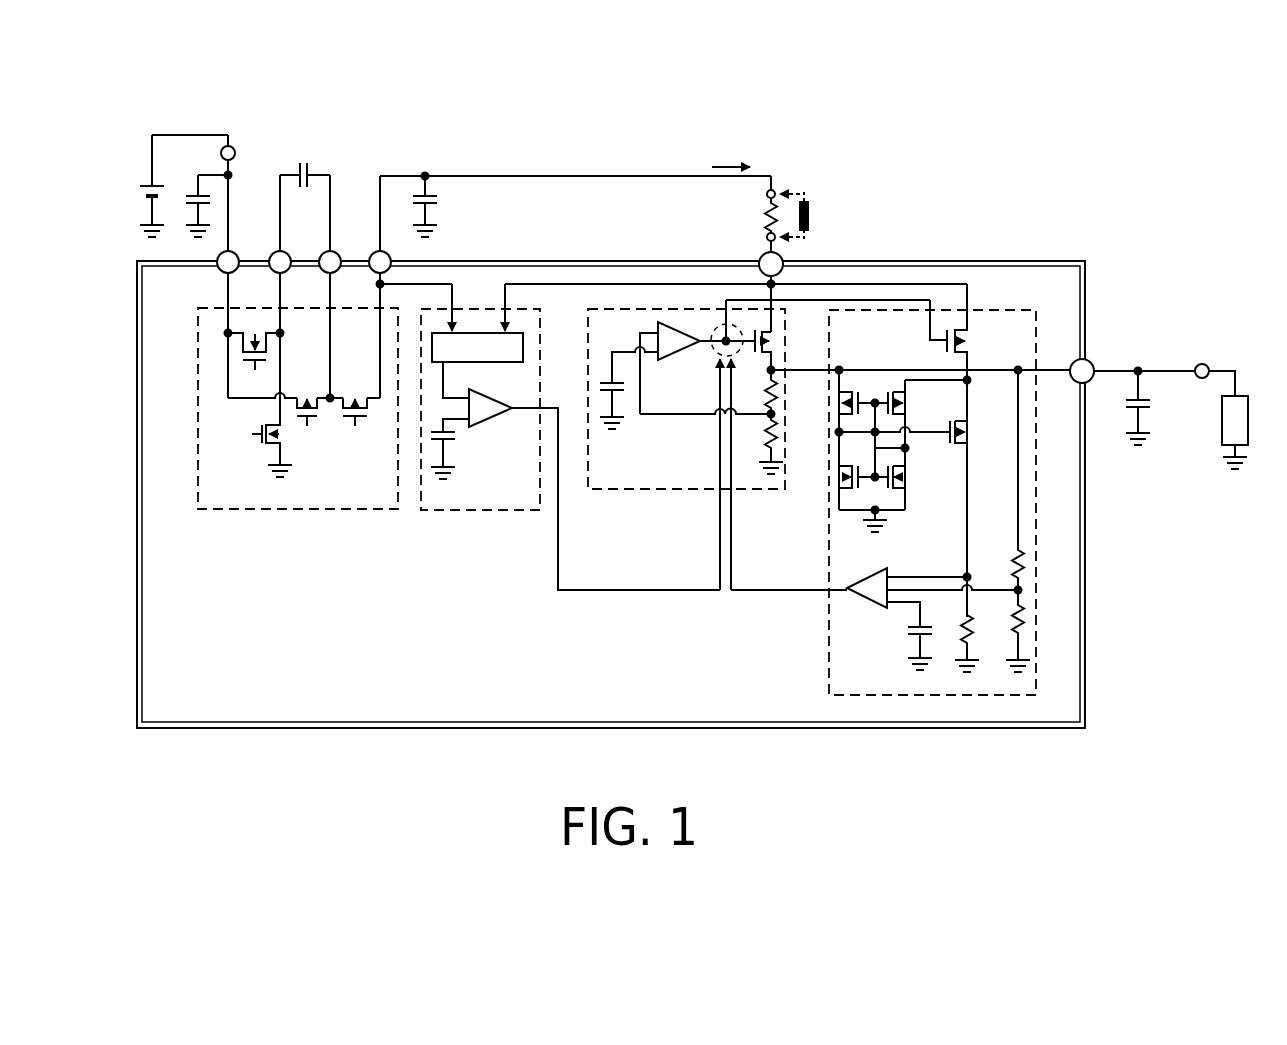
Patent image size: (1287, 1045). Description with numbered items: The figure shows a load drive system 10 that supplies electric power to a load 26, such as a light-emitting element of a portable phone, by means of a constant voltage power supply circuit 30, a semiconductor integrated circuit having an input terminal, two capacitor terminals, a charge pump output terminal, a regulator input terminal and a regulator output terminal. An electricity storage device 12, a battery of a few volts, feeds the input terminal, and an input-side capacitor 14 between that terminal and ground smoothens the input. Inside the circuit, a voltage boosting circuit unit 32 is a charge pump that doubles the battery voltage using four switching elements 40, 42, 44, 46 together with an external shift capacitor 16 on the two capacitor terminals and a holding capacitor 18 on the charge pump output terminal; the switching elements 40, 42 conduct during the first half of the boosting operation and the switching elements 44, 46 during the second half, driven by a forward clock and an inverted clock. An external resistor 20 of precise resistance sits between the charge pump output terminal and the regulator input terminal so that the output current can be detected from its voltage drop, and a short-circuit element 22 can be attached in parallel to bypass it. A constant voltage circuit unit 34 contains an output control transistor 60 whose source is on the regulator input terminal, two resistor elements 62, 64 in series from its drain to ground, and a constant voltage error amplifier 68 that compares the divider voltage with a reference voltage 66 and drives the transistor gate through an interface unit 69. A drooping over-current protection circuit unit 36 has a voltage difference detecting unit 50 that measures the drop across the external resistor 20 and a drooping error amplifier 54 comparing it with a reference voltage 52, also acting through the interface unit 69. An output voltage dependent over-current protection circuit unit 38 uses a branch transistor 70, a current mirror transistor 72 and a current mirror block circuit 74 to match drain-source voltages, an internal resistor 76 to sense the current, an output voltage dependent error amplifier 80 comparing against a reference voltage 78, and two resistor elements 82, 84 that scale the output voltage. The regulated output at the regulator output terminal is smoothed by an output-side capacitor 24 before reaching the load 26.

The load drive system 10 is at (1084, 230).
The electricity storage device 12 is at (148, 196).
The input-side capacitor 14 is at (190, 193).
The shift capacitor 16 is at (310, 160).
The holding capacitor 18 is at (442, 202).
The external resistor 20 is at (752, 194).
The short-circuit element 22 is at (816, 216).
The output-side capacitor 24 is at (1120, 414).
The load 26 is at (1222, 420).
The constant voltage power supply circuit 30 is at (210, 730).
The voltage boosting circuit unit 32 is at (325, 422).
The constant voltage circuit unit 34 is at (759, 433).
The drooping over-current protection circuit unit 36 is at (694, 437).
The output voltage dependent over-current protection circuit unit 38 is at (883, 490).
The switching element 40 is at (307, 390).
The switching element 42 is at (261, 453).
The switching element 44 is at (256, 324).
The switching element 46 is at (355, 390).
The voltage difference detecting unit 50 is at (478, 363).
The reference voltage 52 is at (461, 442).
The drooping error amplifier 54 is at (500, 421).
The output control transistor 60 is at (777, 337).
The resistor element 62 is at (782, 395).
The resistor element 64 is at (782, 435).
The reference voltage 66 is at (624, 396).
The constant voltage error amplifier 68 is at (668, 361).
The interface unit 69 is at (712, 355).
The branch transistor 70 is at (973, 345).
The current mirror transistor 72 is at (976, 441).
The current mirror block circuit 74 is at (907, 518).
The internal resistor 76 is at (957, 634).
The reference voltage 78 is at (910, 636).
The output voltage dependent error amplifier 80 is at (863, 608).
The resistor element 82 is at (1006, 566).
The resistor element 84 is at (1008, 628).